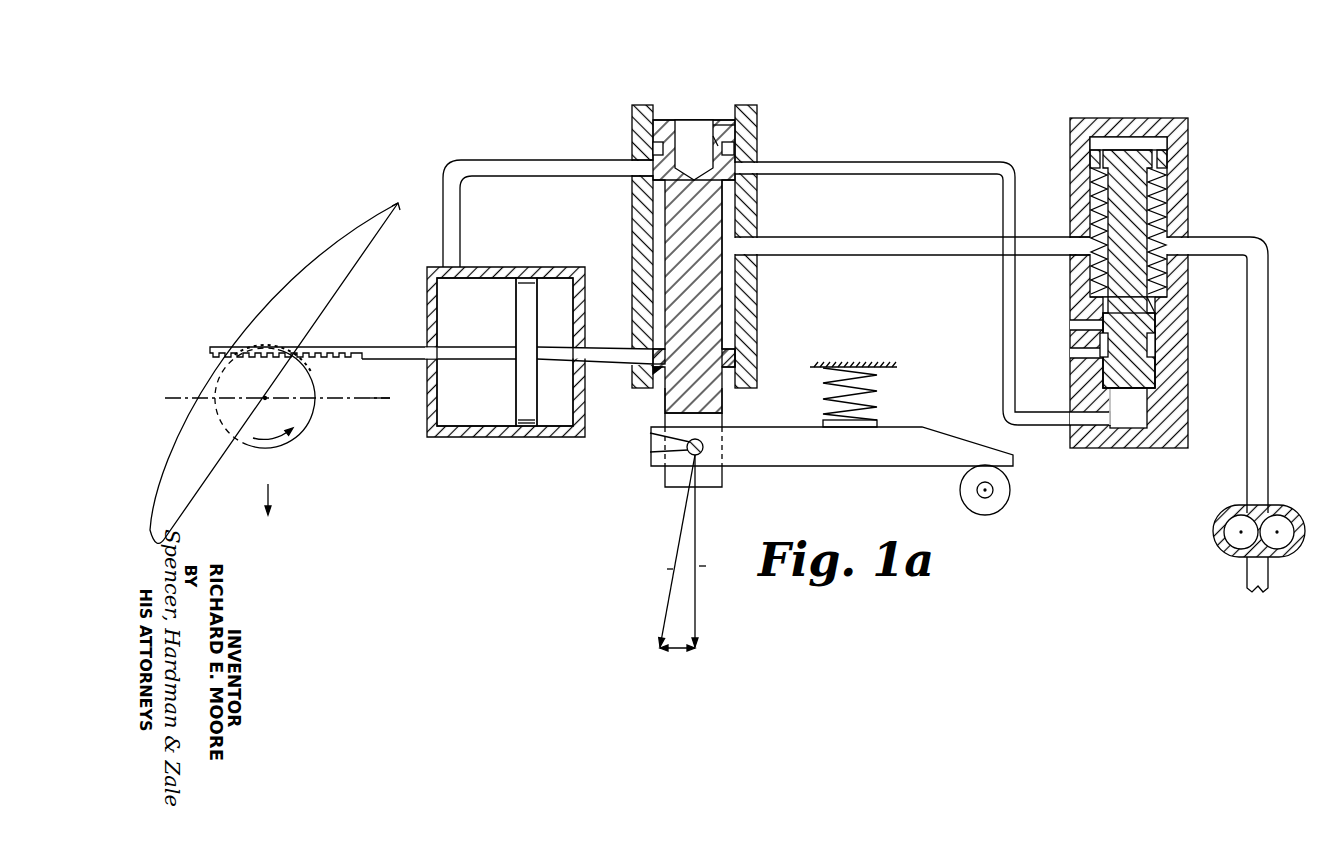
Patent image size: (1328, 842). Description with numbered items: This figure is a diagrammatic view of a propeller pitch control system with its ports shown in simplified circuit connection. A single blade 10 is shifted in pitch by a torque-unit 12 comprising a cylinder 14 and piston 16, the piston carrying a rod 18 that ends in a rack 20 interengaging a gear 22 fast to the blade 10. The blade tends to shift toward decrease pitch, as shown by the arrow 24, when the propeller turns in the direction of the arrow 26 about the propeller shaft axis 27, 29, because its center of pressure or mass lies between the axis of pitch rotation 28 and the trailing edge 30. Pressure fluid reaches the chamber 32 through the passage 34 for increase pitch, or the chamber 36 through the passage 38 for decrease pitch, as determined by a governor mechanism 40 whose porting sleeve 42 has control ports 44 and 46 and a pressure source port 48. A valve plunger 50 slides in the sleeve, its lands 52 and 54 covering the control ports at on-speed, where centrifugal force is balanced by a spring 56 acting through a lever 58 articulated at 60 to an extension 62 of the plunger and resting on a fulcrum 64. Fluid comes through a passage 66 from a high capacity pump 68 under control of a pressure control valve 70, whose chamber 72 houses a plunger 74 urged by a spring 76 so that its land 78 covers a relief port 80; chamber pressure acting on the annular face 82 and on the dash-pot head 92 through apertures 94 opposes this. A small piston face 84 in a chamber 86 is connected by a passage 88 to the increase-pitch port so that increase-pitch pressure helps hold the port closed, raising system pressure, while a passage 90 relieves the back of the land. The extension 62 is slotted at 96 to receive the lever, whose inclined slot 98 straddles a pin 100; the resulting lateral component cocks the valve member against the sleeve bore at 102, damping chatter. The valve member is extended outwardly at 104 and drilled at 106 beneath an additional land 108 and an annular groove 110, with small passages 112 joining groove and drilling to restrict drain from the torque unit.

The blade 10 is at (283, 307).
The torque-unit 12 is at (505, 351).
The cylinder 14 is at (470, 437).
The piston 16 is at (517, 397).
The rod 18 is at (460, 348).
The rack 20 is at (345, 357).
The gear 22 is at (312, 382).
The arrow 24 is at (273, 441).
The arrow 26 is at (266, 487).
The propeller shift axis 27 is at (265, 398).
The axis of pitch rotation 28 is at (266, 398).
The propeller shift axis 29 is at (389, 398).
The trailing edge 30 is at (398, 204).
The chamber 32 is at (489, 280).
The passage 34 is at (503, 160).
The chamber 36 is at (553, 283).
The passage 38 is at (603, 365).
The governor mechanism 40 is at (673, 370).
The porting sleeve 42 is at (640, 130).
The control port 44 is at (640, 168).
The control port 46 is at (647, 357).
The pressure source port 48 is at (752, 250).
The valve plunger 50 is at (674, 240).
The control port land 52 is at (738, 178).
The control port land 54 is at (730, 355).
The spring 56 is at (876, 391).
The lever 58 is at (905, 437).
The articulation 60 is at (706, 447).
The extension 62 is at (718, 404).
The fulcrum 64 is at (1010, 491).
The passage 66 is at (884, 240).
The high capacity pump 68 is at (1222, 520).
The pressure control valve 70 is at (1134, 282).
The chamber 72 is at (1090, 210).
The plunger 74 is at (1140, 197).
The spring 76 is at (1162, 235).
The land 78 is at (1152, 328).
The relief or blow-off port 80 is at (1078, 326).
The annular face 82 is at (1152, 312).
The piston face 84 is at (1140, 395).
The chamber 86 is at (1133, 420).
The passage 88 is at (852, 165).
The passage 90 is at (1082, 353).
The dash-pot head 92 is at (1138, 152).
The apertures 94 is at (1092, 163).
The slot 96 is at (680, 478).
The slot 98 is at (658, 445).
The pin 100 is at (698, 460).
The cocking contact 102 is at (655, 390).
The outward extension 104 is at (668, 122).
The drilling 106 is at (700, 132).
The additional land 108 is at (735, 132).
The annular groove 110 is at (733, 149).
The small passages 112 is at (720, 146).